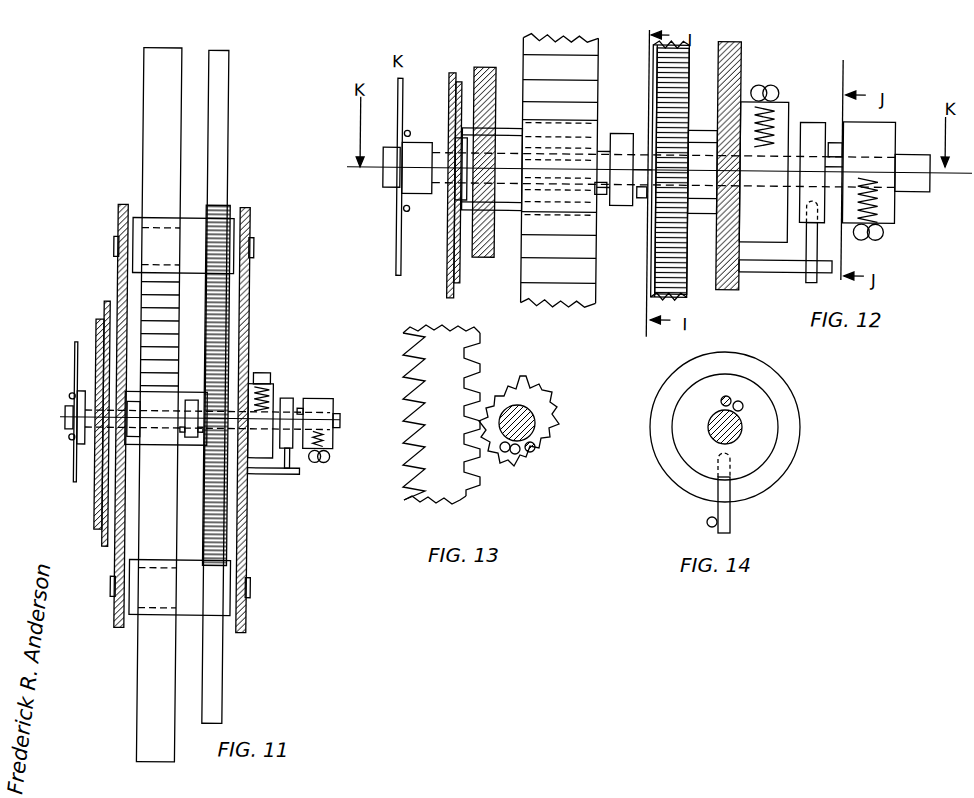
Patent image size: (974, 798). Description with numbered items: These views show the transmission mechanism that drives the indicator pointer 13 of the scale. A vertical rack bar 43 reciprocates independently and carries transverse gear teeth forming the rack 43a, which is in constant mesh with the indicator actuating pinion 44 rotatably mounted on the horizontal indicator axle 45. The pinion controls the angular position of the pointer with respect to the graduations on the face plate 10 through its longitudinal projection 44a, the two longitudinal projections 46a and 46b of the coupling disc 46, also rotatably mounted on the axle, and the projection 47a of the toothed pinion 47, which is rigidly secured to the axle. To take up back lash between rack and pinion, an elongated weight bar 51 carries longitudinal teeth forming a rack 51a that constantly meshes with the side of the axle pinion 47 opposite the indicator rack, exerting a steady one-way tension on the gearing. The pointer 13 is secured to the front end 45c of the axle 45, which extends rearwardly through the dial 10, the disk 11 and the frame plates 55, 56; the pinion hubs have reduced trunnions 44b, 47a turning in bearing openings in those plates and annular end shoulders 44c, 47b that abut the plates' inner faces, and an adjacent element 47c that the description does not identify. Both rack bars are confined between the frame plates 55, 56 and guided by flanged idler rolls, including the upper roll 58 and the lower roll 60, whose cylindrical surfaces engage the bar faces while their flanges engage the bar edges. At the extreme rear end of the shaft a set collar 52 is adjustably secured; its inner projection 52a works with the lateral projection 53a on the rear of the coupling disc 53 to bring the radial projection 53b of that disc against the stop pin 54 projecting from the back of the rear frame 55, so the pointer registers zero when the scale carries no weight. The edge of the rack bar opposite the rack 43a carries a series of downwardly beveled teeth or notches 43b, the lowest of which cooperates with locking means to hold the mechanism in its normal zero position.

In FIG. 11, the face plate 10 is at (95, 517).
In FIG. 12, the face plate 10 is at (448, 289).
In FIG. 11, the disk 11 is at (105, 305).
In FIG. 12, the disk 11 is at (458, 84).
In FIG. 11, the indicator pointer 13 is at (74, 458).
In FIG. 12, the indicator pointer 13 is at (397, 246).
In FIG. 11, the rack bar 43 is at (149, 674).
In FIG. 12, the rack bar 43 is at (580, 297).
In FIG. 13, the rack bar 43 is at (441, 424).
In FIG. 13, the rack 43a is at (474, 481).
In FIG. 13, the beveled teeth or notches 43b is at (404, 492).
In FIG. 11, the indicator actuating pinion 44 is at (175, 446).
In FIG. 12, the indicator actuating pinion 44 is at (570, 121).
In FIG. 13, the indicator actuating pinion 44 is at (563, 400).
In FIG. 12, the longitudinal projection of pinion 44a is at (600, 182).
In FIG. 12, the trunnion or journal 44b is at (487, 252).
In FIG. 12, the annular end shoulder 44c is at (455, 140).
In FIG. 11, the indicator axle 45 is at (340, 418).
In FIG. 12, the indicator axle 45 is at (445, 180).
In FIG. 14, the indicator axle 45 is at (742, 432).
In FIG. 11, the front end of axle 45c is at (65, 418).
In FIG. 12, the front end of axle 45c is at (383, 178).
In FIG. 11, the coupling disc 46 is at (192, 438).
In FIG. 12, the coupling disc 46 is at (622, 169).
In FIG. 12, the longitudinal projection of coupling disc 46a is at (600, 196).
In FIG. 12, the longitudinal projection of coupling disc 46b is at (642, 199).
In FIG. 12, the toothed pinion 47 is at (673, 206).
In FIG. 12, the projection of toothed pinion 47a is at (642, 186).
In FIG. 12, the annular end shoulder 47b is at (717, 201).
In FIG. 12, the spring 47c is at (690, 130).
In FIG. 11, the weight bar 51 is at (217, 697).
In FIG. 12, the weight bar 51 is at (652, 277).
In FIG. 11, the rack 51a is at (214, 542).
In FIG. 12, the rack 51a is at (672, 268).
In FIG. 11, the set collar 52 is at (320, 398).
In FIG. 12, the set collar 52 is at (878, 120).
In FIG. 12, the projection of set collar 52a is at (835, 141).
In FIG. 14, the projection of set collar 52a is at (722, 398).
In FIG. 12, the coupling disc 53 is at (812, 121).
In FIG. 14, the coupling disc 53 is at (768, 427).
In FIG. 11, the lateral projection of coupling disc 53a is at (287, 397).
In FIG. 12, the lateral projection of coupling disc 53a is at (838, 157).
In FIG. 14, the lateral projection of coupling disc 53a is at (743, 405).
In FIG. 11, the radial projection of disc 53b is at (291, 462).
In FIG. 12, the radial projection of disc 53b is at (812, 281).
In FIG. 14, the radial projection of disc 53b is at (730, 522).
In FIG. 11, the stop pin 54 is at (267, 474).
In FIG. 12, the stop pin 54 is at (833, 265).
In FIG. 14, the stop pin 54 is at (707, 519).
In FIG. 11, the rear frame plate 55 is at (248, 621).
In FIG. 12, the rear frame plate 55 is at (740, 58).
In FIG. 11, the frame plate 56 is at (116, 610).
In FIG. 12, the frame plate 56 is at (487, 69).
In FIG. 11, the flanged idler roll 58 is at (193, 222).
In FIG. 11, the flanged idler roll 60 is at (193, 587).